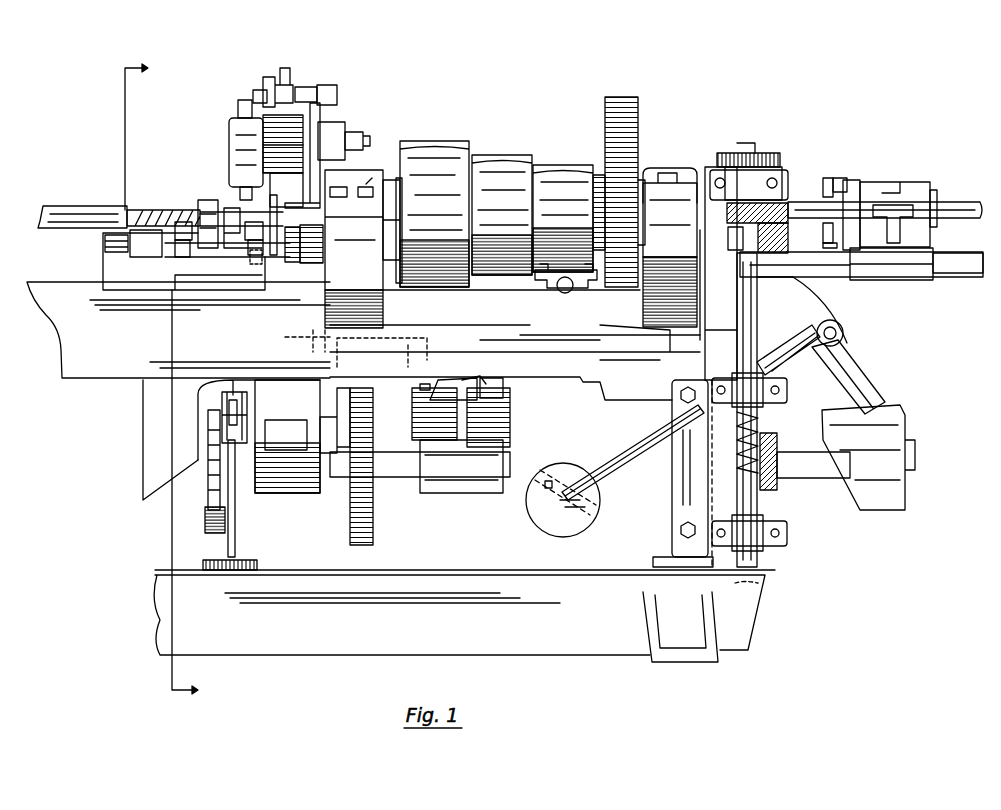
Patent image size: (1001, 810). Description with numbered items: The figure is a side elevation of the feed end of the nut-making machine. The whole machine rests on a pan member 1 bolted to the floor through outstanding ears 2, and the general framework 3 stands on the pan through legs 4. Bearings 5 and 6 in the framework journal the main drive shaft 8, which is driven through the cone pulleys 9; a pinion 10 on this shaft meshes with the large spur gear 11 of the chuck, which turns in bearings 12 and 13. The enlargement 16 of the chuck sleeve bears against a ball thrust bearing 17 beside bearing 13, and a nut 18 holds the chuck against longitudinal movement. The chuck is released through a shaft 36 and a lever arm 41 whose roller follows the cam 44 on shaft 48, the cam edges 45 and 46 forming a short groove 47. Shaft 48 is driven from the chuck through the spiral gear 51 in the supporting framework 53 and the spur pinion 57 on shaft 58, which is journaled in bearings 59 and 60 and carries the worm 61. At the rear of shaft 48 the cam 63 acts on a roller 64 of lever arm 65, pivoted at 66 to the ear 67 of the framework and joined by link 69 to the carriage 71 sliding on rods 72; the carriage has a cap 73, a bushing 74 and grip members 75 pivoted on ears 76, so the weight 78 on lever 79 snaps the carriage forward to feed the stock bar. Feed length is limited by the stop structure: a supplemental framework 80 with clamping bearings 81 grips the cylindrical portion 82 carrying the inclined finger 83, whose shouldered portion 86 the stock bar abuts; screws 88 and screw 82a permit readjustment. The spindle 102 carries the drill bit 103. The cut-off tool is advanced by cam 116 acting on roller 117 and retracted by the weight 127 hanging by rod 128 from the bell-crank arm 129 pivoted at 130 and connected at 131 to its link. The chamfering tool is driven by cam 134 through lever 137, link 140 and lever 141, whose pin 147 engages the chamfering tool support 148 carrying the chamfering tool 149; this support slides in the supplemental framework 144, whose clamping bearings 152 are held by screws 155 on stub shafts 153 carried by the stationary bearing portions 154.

The pan member 1 is at (560, 633).
The outstanding ears 2 is at (670, 652).
The general framework 3 is at (140, 345).
The legs 4 is at (655, 495).
The bearing 5 is at (675, 200).
The bearing 6 is at (402, 106).
The main drive shaft 8 is at (405, 215).
The cone pulleys 9 is at (563, 195).
The pinion 10 is at (625, 195).
The large spur gear 11 is at (625, 140).
The bearing 12 is at (680, 170).
The bearing 13 is at (352, 205).
The enlargement 16 is at (290, 264).
The ball thrust bearing 17 is at (311, 265).
The nut 18 is at (392, 180).
The shaft 36 is at (558, 290).
The lever arm 41 is at (470, 380).
The cam 44 is at (465, 494).
The cam edge 45 is at (495, 378).
The cam edge 46 is at (425, 384).
The groove 47 is at (455, 380).
The shaft 48 is at (818, 479).
The spiral gear 51 is at (800, 202).
The supporting framework 53 is at (712, 243).
The spur pinion 57 is at (770, 155).
The shaft 58 is at (748, 327).
The bearing 59 is at (758, 182).
The bearing 60 is at (765, 403).
The worm 61 is at (779, 442).
The cam 63 is at (905, 420).
The roller 64 is at (750, 293).
The lever arm 65 is at (885, 398).
The pivot 66 is at (845, 333).
The outwardly projecting ear 67 is at (812, 306).
The link 69 is at (880, 281).
The carriage 71 is at (940, 280).
The rearwardly projecting rods 72 is at (968, 278).
The cap 73 is at (913, 185).
The bushing 74 is at (858, 195).
The grip members 75 is at (830, 178).
The outwardly projecting ears 76 is at (843, 185).
The weight 78 is at (545, 530).
The lever 79 is at (615, 441).
The supplemental framework 80 is at (218, 258).
The clamping bearings 81 is at (180, 222).
The cylindrical portion 82 is at (150, 258).
The screw 82a is at (115, 253).
The inclined finger 83 is at (206, 200).
The shouldered portion 86 is at (227, 208).
The screws 88 is at (185, 258).
The spindle 102 is at (62, 204).
The bit 103 is at (150, 210).
The cam 116 is at (213, 487).
The roller 117 is at (203, 527).
The weight 127 is at (257, 564).
The rod 128 is at (236, 545).
The arm 129 is at (222, 423).
The pivot 130 is at (240, 392).
The pivot connection 131 is at (230, 400).
The cam 134 is at (373, 543).
The lever 137 is at (412, 422).
The link 140 is at (335, 346).
The lever 141 is at (286, 66).
The supplemental chamfering tool framework 144 is at (330, 85).
The pin 147 is at (305, 86).
The chamfering tool support 148 is at (270, 80).
The chamfering tool 149 is at (242, 103).
The clamping bearings 152 is at (332, 113).
The stub shafts 153 is at (338, 125).
The stationary bearing portions 154 is at (340, 140).
The screws 155 is at (262, 128).